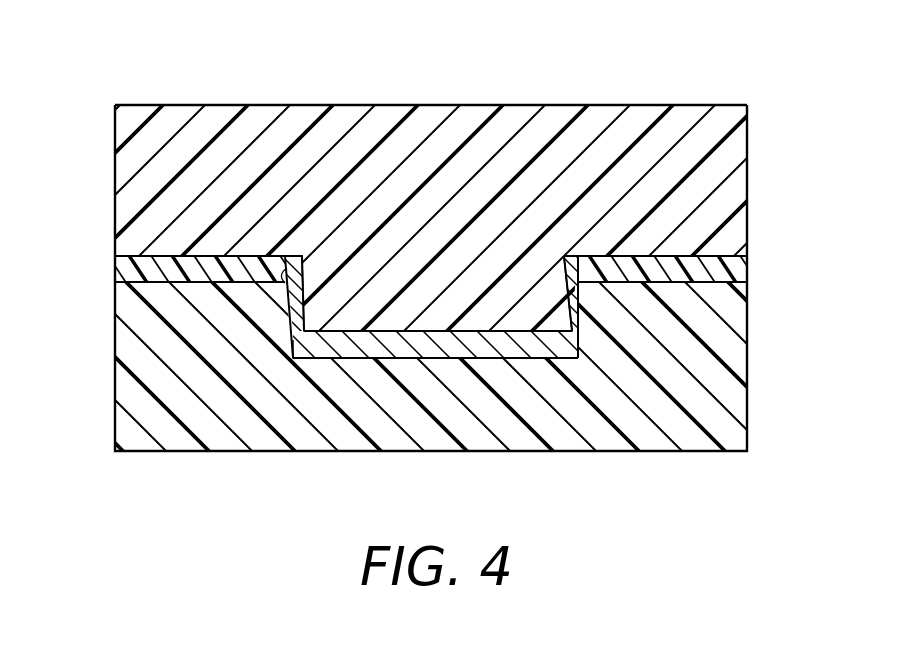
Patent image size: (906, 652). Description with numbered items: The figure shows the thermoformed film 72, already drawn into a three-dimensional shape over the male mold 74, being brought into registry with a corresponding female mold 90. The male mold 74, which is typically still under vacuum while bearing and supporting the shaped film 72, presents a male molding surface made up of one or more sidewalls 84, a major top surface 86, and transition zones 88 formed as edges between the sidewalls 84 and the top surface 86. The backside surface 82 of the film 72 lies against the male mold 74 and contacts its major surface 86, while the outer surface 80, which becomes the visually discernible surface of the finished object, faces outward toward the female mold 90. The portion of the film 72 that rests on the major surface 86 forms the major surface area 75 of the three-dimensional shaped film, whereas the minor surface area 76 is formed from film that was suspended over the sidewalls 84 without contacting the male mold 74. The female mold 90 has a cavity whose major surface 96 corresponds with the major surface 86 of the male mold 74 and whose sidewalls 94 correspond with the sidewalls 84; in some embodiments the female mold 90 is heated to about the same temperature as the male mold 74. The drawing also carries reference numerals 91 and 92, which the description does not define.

The thermoformable film 72 is at (117, 273).
The male mold 74 is at (733, 153).
The major surface area of the three-dimensional shaped film 75 is at (407, 350).
The minor surface area of the three-dimensional shaped film 76 is at (287, 290).
The outer surface of the film 80 is at (168, 283).
The backside surface of the film 82 is at (170, 257).
The sidewalls 84 is at (300, 277).
The major top surface 86 is at (496, 330).
The transition zones 88 is at (302, 330).
The female mold 90 is at (733, 358).
The substrate interface 91 is at (593, 283).
The right sidewall liner 92 is at (576, 280).
The sidewalls of the female mold 94 is at (295, 335).
The major surface of the female mold 96 is at (527, 360).